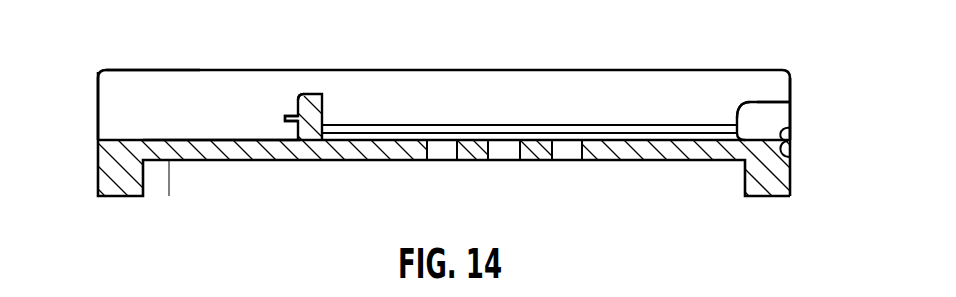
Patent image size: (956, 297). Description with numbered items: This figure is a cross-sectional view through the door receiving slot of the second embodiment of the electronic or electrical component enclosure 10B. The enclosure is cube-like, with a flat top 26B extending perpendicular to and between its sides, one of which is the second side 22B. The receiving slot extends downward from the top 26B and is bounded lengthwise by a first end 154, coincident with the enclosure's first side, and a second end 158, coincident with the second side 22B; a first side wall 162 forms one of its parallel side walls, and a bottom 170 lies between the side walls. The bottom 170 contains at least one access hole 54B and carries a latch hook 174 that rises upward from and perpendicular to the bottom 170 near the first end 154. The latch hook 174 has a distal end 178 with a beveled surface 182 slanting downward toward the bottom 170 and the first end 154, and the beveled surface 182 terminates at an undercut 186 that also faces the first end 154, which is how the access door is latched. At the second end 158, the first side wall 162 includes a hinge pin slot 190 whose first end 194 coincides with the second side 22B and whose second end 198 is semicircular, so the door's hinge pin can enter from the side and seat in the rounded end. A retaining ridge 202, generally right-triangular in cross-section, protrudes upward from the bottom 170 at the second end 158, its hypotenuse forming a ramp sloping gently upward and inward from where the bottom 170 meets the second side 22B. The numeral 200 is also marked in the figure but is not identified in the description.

The flat top 26B is at (503, 70).
The electronic or electrical component enclosure 10B is at (98, 160).
The second side 22B is at (793, 177).
The access hole 54B is at (450, 161).
The first end 154 is at (98, 108).
The first side wall 162 is at (142, 83).
The bottom 170 is at (215, 141).
The distal end 178 is at (307, 96).
The beveled surface 182 is at (297, 107).
The undercut 186 is at (297, 126).
The latch hook 174 is at (326, 106).
The first end 194 is at (790, 113).
The second end 198 is at (737, 113).
The hinge pin slot 190 is at (767, 94).
The second end 158 is at (790, 88).
The latch wall 200 is at (790, 127).
The retaining ridge 202 is at (790, 163).